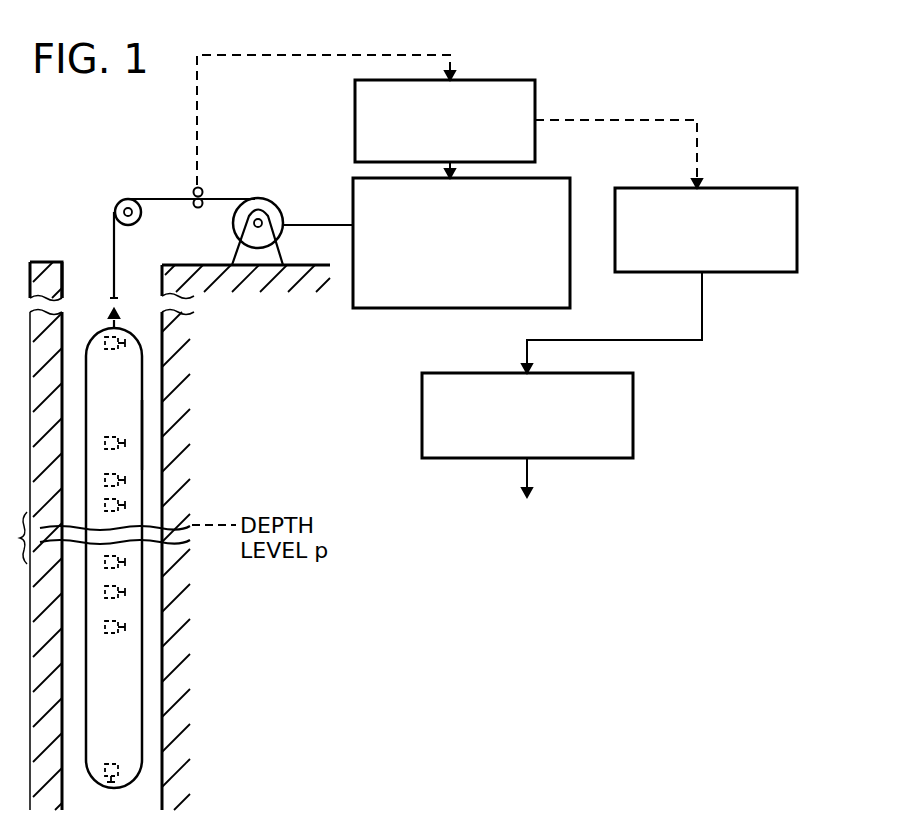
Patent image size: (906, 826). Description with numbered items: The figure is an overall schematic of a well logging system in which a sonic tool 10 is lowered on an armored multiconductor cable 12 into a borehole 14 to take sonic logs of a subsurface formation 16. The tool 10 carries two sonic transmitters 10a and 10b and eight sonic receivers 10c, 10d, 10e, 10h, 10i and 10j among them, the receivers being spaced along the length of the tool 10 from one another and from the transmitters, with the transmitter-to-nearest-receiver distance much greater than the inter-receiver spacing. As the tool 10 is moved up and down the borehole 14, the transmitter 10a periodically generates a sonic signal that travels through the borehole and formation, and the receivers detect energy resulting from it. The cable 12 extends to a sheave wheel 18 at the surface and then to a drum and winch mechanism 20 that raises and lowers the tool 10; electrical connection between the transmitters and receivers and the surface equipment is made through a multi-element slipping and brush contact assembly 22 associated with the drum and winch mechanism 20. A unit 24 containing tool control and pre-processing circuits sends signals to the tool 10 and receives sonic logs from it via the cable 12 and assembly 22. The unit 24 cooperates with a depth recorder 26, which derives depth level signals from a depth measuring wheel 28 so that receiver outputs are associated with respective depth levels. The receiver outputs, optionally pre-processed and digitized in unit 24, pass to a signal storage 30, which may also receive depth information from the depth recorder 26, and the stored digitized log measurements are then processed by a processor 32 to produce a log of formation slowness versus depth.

The sonic tool 10 is at (128, 400).
The sonic transmitter 10a is at (114, 790).
The sonic transmitter 10b is at (125, 343).
The sonic receiver 10c is at (125, 443).
The sonic receiver 10d is at (125, 480).
The sonic receiver 10e is at (125, 505).
The sonic receiver 10h is at (125, 562).
The sonic receiver 10i is at (125, 592).
The sonic receiver 10j is at (125, 627).
The armored multiconductor cable 12 is at (116, 258).
The borehole 14 is at (170, 420).
The subsurface formation 16 is at (320, 430).
The sheave wheel 18 is at (125, 197).
The drum and winch mechanism 20 is at (275, 207).
The multi-element slipping and brush contact assembly 22 is at (270, 256).
The tool control and pre-processing circuits unit 24 is at (553, 178).
The depth recorder 26 is at (536, 92).
The depth measuring wheel 28 is at (202, 190).
The signal storage 30 is at (775, 188).
The processor 32 is at (636, 388).